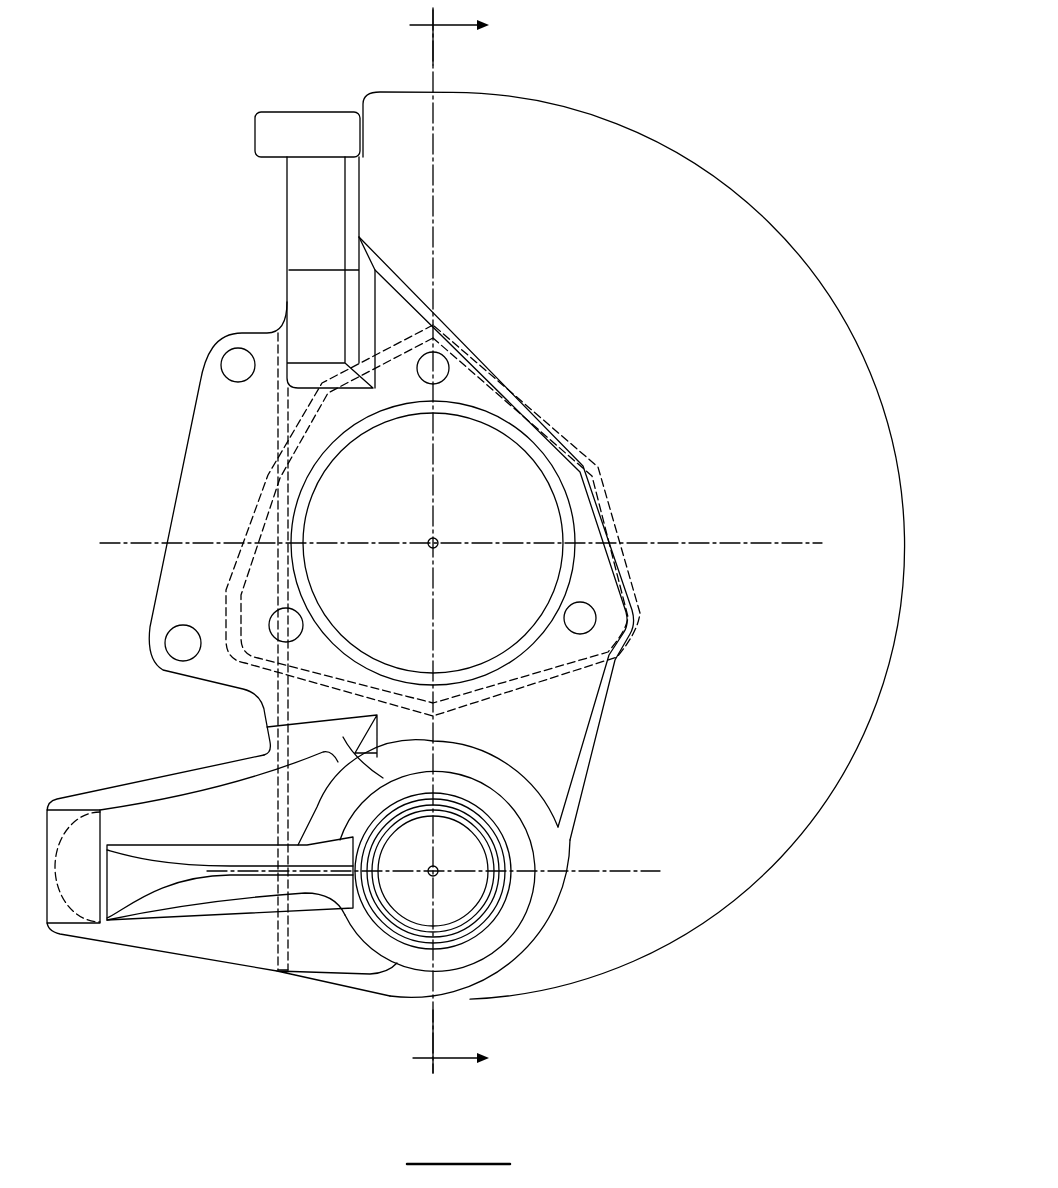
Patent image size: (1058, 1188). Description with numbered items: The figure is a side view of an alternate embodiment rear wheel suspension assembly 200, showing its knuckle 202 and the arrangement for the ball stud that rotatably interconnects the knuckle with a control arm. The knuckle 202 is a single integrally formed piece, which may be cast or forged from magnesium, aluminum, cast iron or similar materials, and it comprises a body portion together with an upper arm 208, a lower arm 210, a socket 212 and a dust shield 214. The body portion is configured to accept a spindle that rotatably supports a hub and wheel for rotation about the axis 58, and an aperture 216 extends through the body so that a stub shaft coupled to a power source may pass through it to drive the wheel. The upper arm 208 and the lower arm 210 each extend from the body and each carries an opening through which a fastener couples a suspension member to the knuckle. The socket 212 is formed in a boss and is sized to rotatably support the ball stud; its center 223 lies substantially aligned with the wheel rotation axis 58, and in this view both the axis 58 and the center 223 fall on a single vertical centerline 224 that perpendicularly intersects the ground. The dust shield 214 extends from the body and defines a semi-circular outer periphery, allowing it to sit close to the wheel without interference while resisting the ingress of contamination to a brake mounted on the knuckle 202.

The rear wheel suspension assembly 200 is at (186, 103).
The knuckle 202 is at (183, 303).
The upper arm 208 is at (292, 200).
The lower arm 210 is at (200, 937).
The socket 212 is at (453, 827).
The dust shield 214 is at (659, 144).
The aperture 216 is at (527, 492).
The center 223 is at (437, 874).
The vertical centerline 224 is at (434, 189).
The axis 58 is at (432, 538).